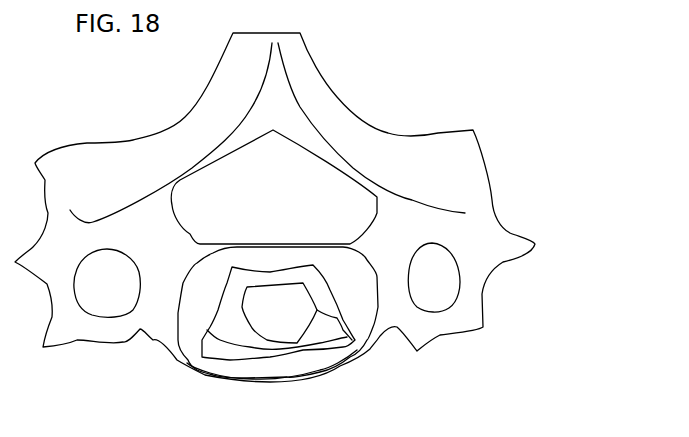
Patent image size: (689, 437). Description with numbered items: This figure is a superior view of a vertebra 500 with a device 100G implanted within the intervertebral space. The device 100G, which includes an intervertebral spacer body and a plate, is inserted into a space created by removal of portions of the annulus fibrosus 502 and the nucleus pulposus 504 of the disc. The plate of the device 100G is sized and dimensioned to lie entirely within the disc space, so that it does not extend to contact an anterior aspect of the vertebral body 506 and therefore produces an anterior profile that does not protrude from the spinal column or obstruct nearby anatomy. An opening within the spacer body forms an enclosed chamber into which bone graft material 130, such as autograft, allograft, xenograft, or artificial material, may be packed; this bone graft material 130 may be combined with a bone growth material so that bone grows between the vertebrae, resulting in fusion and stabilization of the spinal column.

The vertebra 500 is at (511, 210).
The annulus fibrosus 502 is at (423, 350).
The nucleus pulposus 504 is at (313, 245).
The vertebral body 506 is at (207, 373).
The bone graft material 130 is at (260, 307).
The device 100G is at (328, 387).